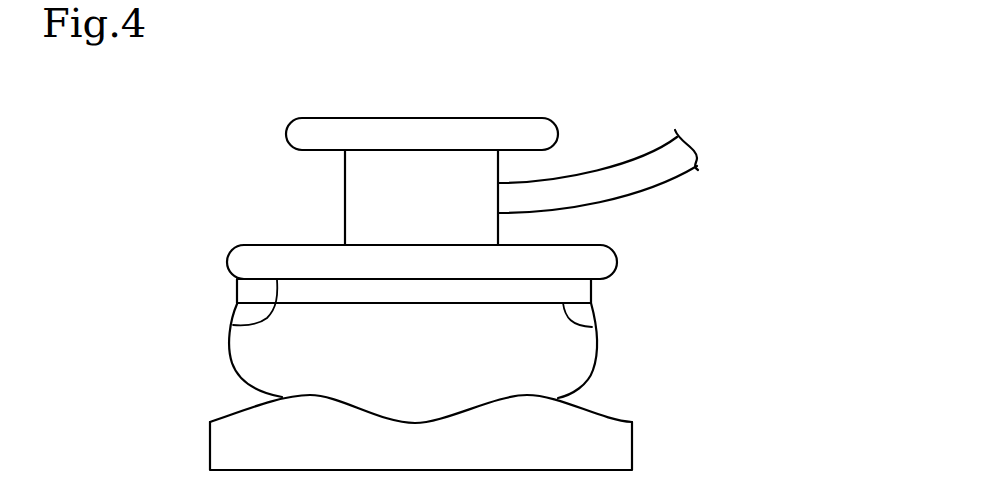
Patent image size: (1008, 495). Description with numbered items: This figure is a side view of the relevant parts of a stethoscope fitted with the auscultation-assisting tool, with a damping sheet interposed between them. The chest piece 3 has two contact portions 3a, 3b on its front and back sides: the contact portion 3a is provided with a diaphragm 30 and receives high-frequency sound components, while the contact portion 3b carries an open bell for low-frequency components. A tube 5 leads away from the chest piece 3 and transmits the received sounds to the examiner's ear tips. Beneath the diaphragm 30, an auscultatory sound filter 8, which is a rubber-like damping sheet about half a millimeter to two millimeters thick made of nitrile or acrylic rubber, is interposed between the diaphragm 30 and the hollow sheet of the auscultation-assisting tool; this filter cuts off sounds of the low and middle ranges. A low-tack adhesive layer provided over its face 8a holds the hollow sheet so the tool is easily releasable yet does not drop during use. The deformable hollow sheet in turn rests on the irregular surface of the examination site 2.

The examination site 2 is at (623, 442).
The chest piece 3 is at (344, 200).
The contact portion 3a is at (227, 260).
The contact portion 3b is at (427, 117).
The tube 5 is at (632, 160).
The auscultatory sound filter 8 is at (592, 293).
The face 8a is at (599, 325).
The diaphragm 30 is at (247, 325).